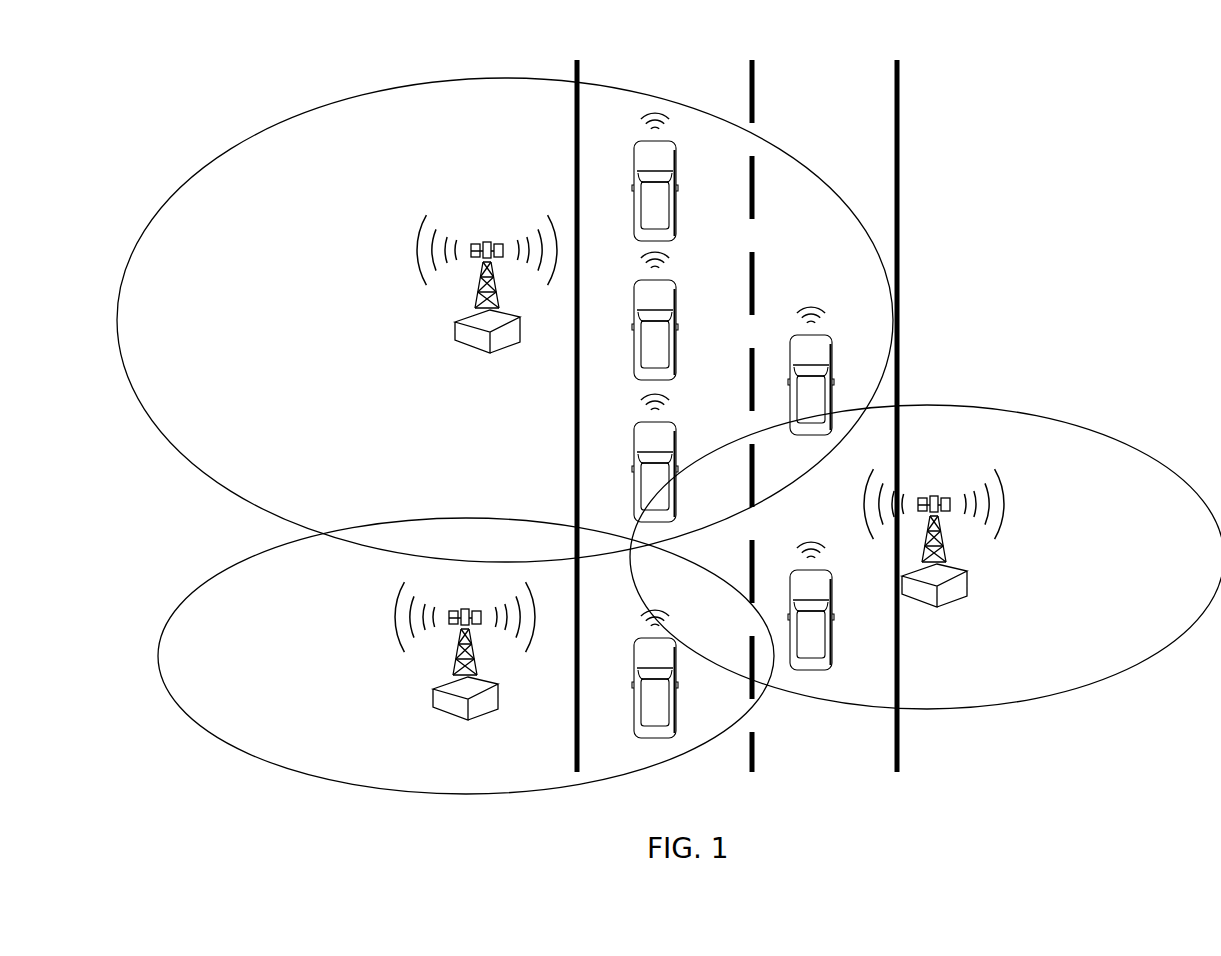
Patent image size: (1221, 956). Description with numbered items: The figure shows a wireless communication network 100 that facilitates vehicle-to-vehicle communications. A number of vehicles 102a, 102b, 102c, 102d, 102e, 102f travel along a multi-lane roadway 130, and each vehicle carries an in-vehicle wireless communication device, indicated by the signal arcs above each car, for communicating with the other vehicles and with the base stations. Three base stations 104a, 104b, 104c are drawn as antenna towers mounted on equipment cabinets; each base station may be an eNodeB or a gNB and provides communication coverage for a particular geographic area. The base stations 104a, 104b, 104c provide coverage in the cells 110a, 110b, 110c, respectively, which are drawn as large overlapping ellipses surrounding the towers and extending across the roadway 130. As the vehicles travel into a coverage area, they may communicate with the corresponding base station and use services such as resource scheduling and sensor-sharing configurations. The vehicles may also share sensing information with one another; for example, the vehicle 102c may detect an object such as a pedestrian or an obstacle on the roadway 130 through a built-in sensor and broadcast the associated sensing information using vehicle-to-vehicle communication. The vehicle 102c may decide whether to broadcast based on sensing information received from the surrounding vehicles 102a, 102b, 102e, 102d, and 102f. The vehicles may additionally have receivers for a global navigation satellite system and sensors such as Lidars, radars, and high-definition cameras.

The wireless communication network 100 is at (1079, 125).
The roadway 130 is at (830, 103).
The cell 110a is at (318, 104).
The cell 110b is at (243, 560).
The cell 110c is at (1065, 422).
The base station 104a is at (455, 331).
The base station 104b is at (434, 699).
The base station 104c is at (968, 585).
The vehicle 102a is at (677, 178).
The vehicle 102b is at (677, 312).
The vehicle 102c is at (677, 455).
The vehicle 102d is at (677, 720).
The vehicle 102e is at (850, 350).
The vehicle 102f is at (833, 590).